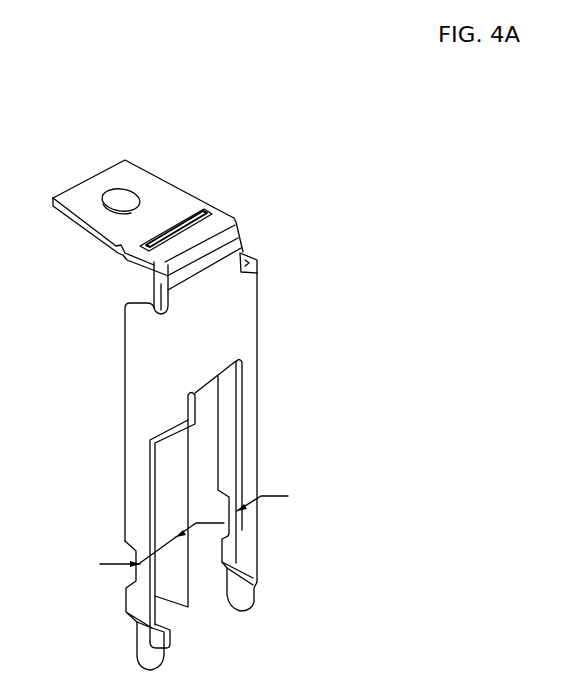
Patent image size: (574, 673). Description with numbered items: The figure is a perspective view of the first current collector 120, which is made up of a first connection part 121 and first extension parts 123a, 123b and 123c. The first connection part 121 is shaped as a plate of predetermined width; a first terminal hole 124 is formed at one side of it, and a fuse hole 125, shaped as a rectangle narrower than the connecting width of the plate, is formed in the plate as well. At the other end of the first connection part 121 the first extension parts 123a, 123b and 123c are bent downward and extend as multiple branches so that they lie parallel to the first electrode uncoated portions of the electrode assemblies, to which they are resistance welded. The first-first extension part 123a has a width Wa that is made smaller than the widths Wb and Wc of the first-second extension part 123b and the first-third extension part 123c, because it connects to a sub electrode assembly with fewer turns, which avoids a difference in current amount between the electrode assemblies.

The first current collector 120 is at (290, 181).
The first connection part 121 is at (156, 183).
The first terminal hole 124 is at (118, 197).
The fuse hole 125 is at (196, 222).
The first-first extension part 123a is at (163, 482).
The first-second extension part 123b is at (131, 462).
The first-third extension part 123c is at (237, 424).